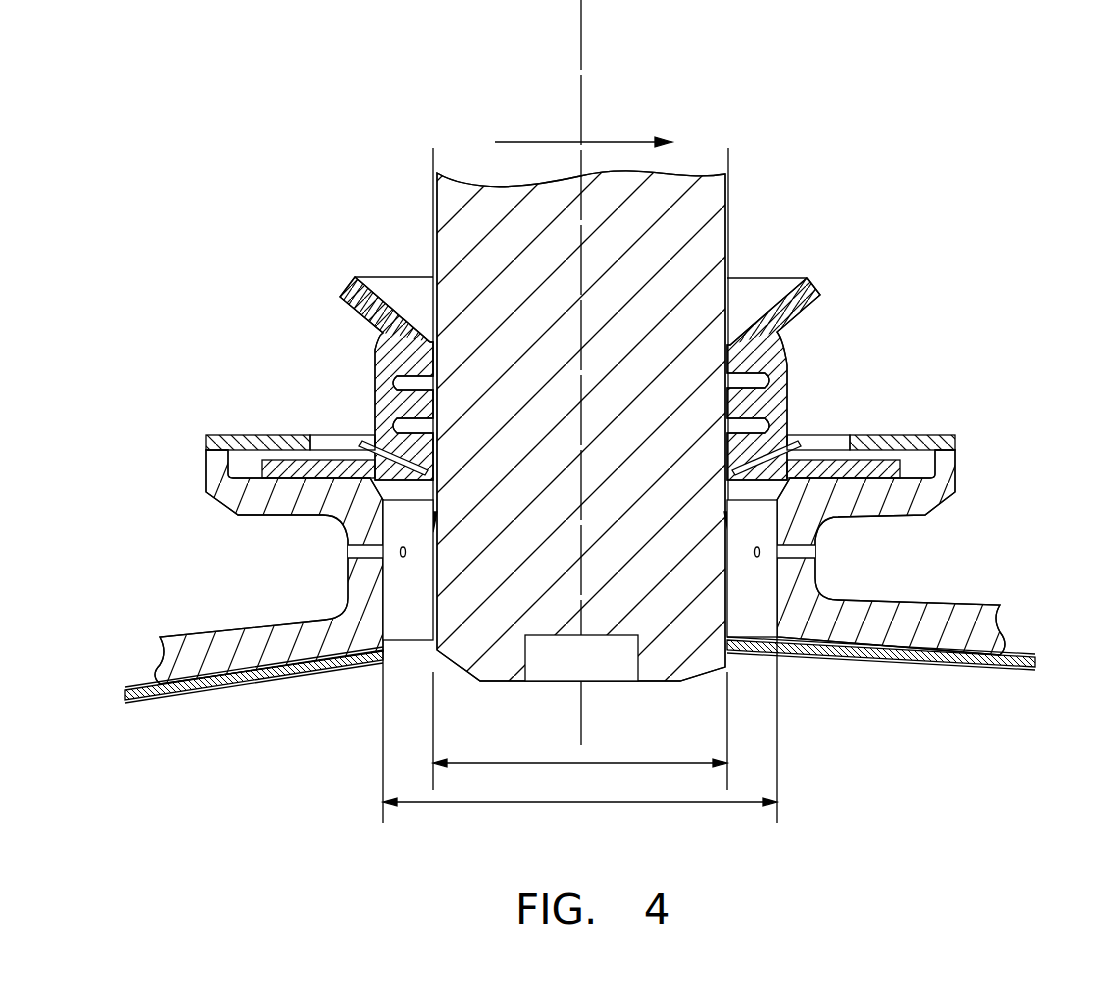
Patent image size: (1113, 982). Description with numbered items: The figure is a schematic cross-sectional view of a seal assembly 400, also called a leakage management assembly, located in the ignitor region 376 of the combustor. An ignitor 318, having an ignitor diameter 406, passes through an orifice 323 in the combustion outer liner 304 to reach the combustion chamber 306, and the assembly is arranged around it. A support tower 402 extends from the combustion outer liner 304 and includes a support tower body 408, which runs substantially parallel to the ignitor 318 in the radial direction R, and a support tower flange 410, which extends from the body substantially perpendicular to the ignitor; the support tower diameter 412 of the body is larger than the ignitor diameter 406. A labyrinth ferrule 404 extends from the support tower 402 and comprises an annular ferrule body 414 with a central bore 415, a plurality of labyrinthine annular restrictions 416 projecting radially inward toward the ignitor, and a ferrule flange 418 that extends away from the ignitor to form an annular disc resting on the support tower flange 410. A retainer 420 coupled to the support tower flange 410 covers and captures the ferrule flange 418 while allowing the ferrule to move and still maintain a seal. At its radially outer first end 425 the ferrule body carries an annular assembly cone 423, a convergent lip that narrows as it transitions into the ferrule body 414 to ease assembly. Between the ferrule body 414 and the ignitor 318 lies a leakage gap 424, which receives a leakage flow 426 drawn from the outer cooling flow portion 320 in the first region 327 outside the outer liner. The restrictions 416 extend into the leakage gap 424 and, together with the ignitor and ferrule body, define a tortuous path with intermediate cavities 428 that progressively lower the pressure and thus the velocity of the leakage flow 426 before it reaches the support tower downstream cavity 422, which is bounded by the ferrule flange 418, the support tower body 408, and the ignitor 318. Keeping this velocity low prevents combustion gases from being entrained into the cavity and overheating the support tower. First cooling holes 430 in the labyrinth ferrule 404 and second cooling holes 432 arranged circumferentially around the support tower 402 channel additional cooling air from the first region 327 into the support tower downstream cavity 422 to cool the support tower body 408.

The radial direction R is at (581, 105).
The combustion outer liner 304 is at (975, 600).
The combustion chamber 306 is at (808, 777).
The ignitor 318 is at (462, 180).
The outer cooling flow portion 320 is at (553, 140).
The orifice 323 is at (752, 692).
The first region 327 is at (188, 107).
The ignitor region 376 is at (336, 724).
The seal assembly 400 is at (751, 105).
The support tower 402 is at (565, 567).
The labyrinth ferrule 404 is at (496, 347).
The ignitor diameter 406 is at (617, 763).
The support tower body 408 is at (352, 603).
The support tower flange 410 is at (308, 505).
The support tower diameter 412 is at (552, 802).
The ferrule body 414 is at (799, 359).
The central bore 415 is at (755, 304).
The labyrinthine annular restrictions 416 is at (730, 373).
The ferrule flange 418 is at (896, 438).
The retainer 420 is at (958, 436).
The support tower downstream cavity 422 is at (390, 624).
The annular assembly cone 423 is at (409, 245).
The leakage gap 424 is at (740, 285).
The radially outer first end 425 is at (352, 287).
The leakage flow 426 is at (433, 158).
The intermediate cavities 428 is at (430, 412).
The first cooling holes 430 is at (375, 450).
The second cooling holes 432 is at (332, 552).